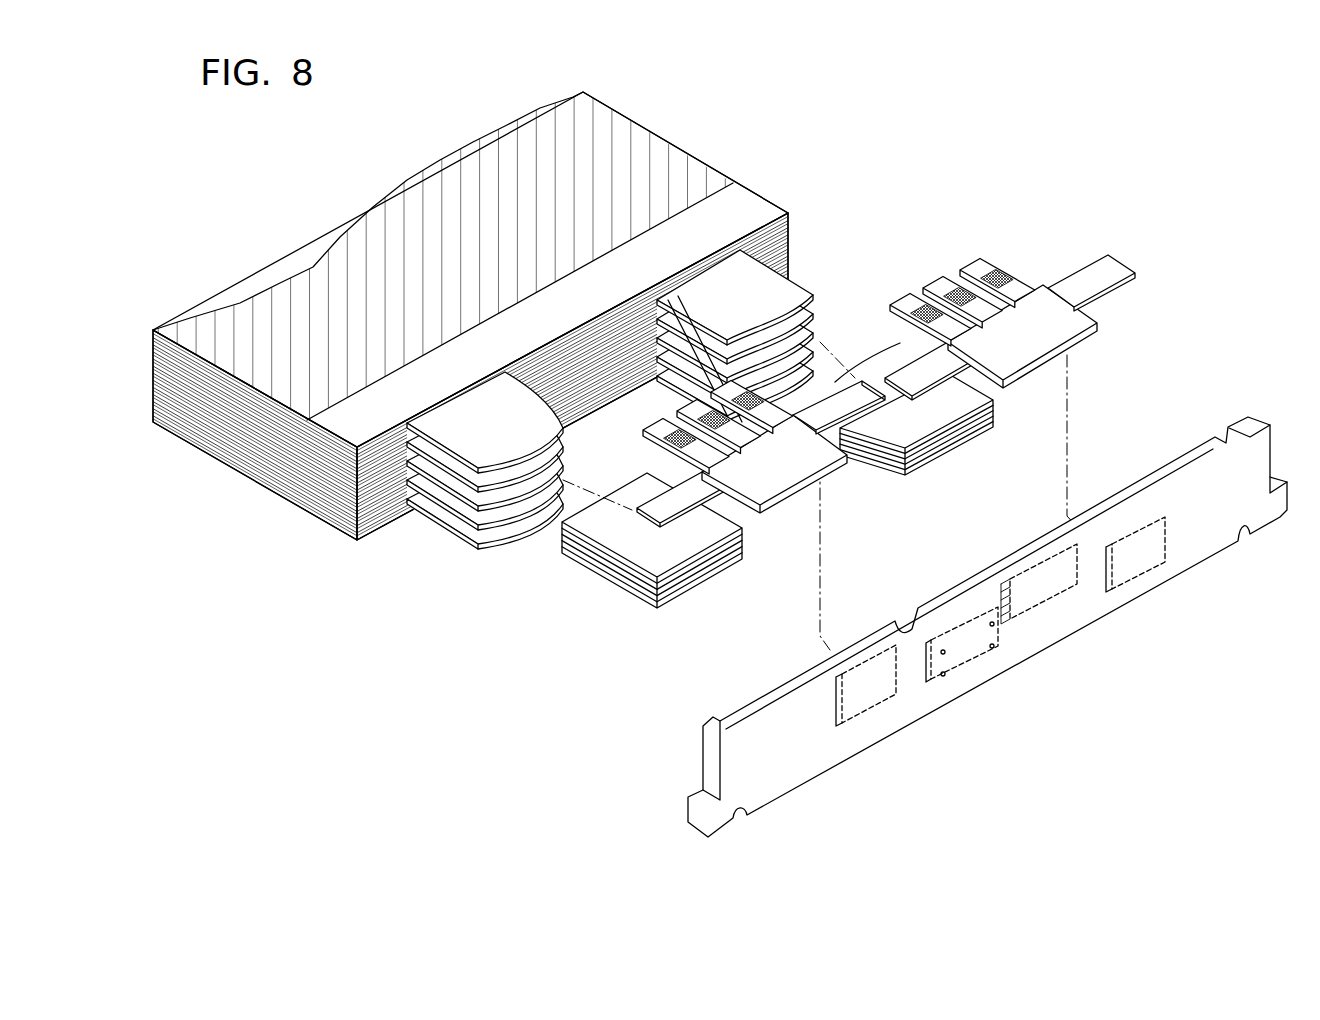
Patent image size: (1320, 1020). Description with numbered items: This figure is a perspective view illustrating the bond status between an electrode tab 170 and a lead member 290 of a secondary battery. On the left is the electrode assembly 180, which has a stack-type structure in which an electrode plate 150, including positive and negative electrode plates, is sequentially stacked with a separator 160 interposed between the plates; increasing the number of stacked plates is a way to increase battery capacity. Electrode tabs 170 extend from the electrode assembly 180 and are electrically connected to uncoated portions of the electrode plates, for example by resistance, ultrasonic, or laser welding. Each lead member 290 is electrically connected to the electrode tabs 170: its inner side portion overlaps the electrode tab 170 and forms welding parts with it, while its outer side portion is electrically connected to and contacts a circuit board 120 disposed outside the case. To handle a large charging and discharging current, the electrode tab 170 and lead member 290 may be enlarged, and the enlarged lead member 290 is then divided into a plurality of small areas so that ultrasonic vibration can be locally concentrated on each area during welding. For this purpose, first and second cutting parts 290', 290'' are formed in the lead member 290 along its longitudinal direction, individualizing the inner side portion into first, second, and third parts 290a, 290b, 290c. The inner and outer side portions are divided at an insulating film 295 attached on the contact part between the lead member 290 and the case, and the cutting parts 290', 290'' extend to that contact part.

The circuit board 120 is at (1182, 458).
The electrode plate 150 is at (298, 423).
The separator 160 is at (323, 440).
The electrode tab 170 is at (478, 440).
The electrode assembly 180 is at (724, 142).
The lead member 290 is at (910, 406).
The first part 290a is at (644, 431).
The second part 290b is at (704, 456).
The third part 290c is at (786, 420).
The first cutting part 290' is at (770, 341).
The second cutting part 290'' is at (806, 314).
The insulating film 295 is at (1112, 265).